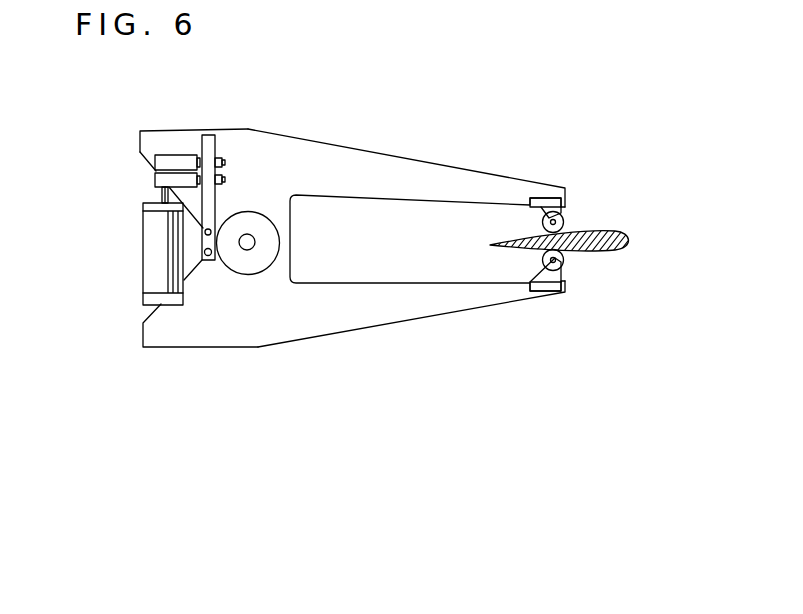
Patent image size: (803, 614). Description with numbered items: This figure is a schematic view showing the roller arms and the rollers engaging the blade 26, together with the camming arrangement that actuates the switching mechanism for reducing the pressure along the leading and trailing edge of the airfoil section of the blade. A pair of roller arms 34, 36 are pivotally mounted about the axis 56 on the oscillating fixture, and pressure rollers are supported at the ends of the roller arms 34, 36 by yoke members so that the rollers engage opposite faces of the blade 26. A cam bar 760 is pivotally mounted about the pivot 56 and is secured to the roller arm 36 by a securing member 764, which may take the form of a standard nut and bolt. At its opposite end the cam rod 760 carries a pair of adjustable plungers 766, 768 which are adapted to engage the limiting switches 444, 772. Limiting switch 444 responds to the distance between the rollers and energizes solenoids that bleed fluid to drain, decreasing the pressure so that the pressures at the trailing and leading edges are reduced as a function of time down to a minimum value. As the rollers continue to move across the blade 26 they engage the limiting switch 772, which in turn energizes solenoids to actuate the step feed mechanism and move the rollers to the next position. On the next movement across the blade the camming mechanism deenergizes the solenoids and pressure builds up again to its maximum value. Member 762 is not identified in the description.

The blade 26 is at (619, 222).
The roller arm 34 is at (430, 167).
The roller arm 36 is at (404, 313).
The axis 56 is at (256, 231).
The limiting switch 444 is at (163, 180).
The cam bar 760 is at (207, 138).
The diagonal member 762 is at (212, 228).
The securing member 764 is at (208, 258).
The adjustable plunger 766 is at (217, 161).
The adjustable plunger 768 is at (217, 178).
The limiting switch 772 is at (160, 162).